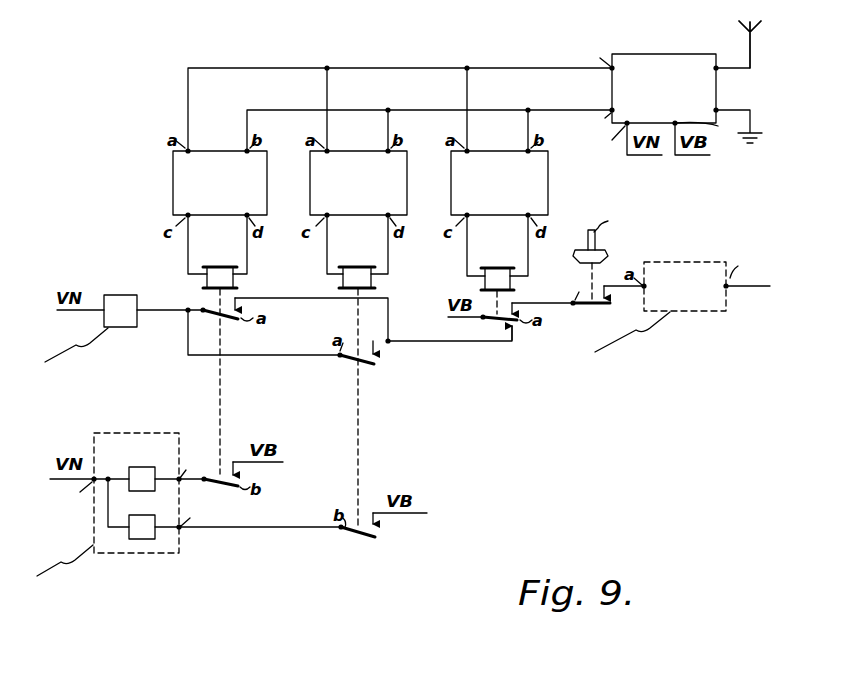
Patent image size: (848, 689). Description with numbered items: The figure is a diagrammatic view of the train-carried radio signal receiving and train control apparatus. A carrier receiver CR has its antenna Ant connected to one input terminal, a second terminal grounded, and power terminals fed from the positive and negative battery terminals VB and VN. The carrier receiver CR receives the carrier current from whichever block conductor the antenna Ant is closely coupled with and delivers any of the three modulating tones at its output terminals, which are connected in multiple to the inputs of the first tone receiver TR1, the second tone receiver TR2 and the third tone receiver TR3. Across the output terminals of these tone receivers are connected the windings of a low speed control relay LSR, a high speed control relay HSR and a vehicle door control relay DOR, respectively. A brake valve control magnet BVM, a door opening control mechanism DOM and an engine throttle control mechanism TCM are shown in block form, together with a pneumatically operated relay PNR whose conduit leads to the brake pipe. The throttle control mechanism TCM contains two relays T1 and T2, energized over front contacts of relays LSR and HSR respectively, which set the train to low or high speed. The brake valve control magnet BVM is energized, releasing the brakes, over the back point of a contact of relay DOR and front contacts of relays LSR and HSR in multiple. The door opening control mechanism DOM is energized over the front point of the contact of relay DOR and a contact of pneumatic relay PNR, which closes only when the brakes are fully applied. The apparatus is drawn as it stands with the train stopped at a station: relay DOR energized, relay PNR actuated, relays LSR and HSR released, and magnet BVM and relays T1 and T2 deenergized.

The carrier receiver CR is at (683, 50).
The antenna Ant is at (748, 22).
The No. 1 tone receiver TR1 is at (220, 183).
The No. 2 tone receiver TR2 is at (358, 183).
The No. 3 tone receiver TR3 is at (499, 183).
The low speed control relay LSR is at (217, 251).
The high speed control relay HSR is at (357, 251).
The vehicle door control relay DOR is at (497, 252).
The brake valve control magnet BVM is at (110, 340).
The pneumatically operated relay PNR is at (597, 244).
The door opening control mechanism DOM is at (727, 307).
The engine throttle control mechanism TCM is at (180, 550).
The relay T1 is at (142, 468).
The relay T2 is at (140, 518).